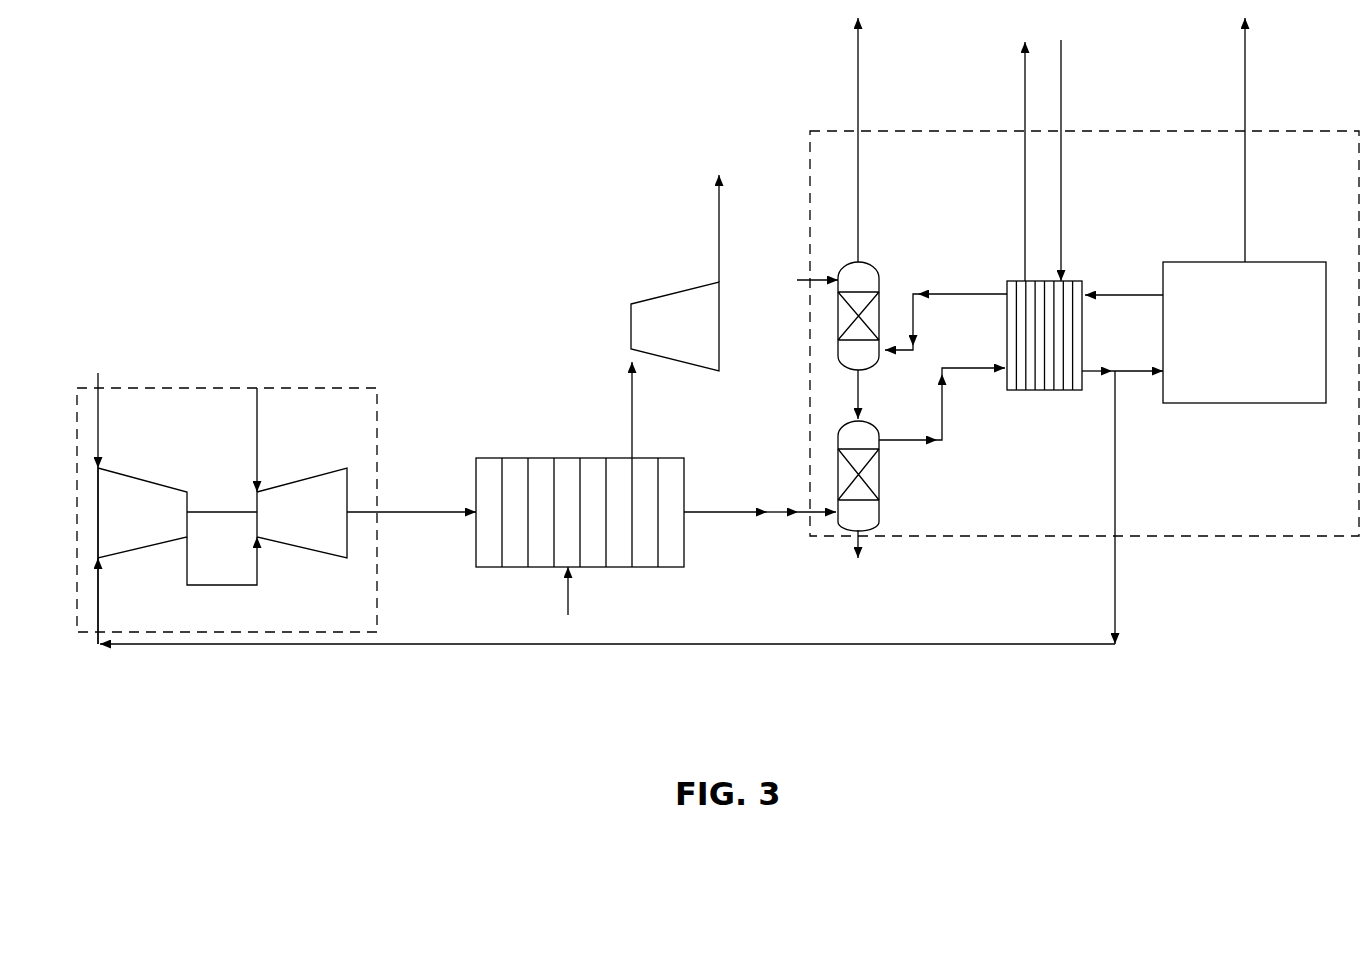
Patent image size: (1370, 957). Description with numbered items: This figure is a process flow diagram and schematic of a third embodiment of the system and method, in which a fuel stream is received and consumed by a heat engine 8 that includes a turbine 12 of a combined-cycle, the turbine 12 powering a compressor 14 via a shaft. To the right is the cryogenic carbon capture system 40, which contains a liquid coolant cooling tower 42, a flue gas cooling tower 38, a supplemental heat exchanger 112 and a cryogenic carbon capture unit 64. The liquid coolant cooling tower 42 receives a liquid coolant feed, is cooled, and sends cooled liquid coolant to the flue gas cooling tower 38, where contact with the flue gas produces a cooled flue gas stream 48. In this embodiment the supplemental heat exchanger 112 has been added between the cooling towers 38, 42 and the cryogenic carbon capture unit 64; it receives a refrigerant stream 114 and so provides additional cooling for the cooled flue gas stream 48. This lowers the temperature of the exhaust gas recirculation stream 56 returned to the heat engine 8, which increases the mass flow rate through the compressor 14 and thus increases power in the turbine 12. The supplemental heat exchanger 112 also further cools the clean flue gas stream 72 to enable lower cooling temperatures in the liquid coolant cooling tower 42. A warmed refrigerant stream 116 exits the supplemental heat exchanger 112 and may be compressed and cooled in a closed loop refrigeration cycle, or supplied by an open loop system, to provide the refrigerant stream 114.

The heat engine 8 is at (329, 387).
The turbine 12 is at (308, 477).
The compressor 14 is at (142, 548).
The flue gas cooling tower 38 is at (838, 437).
The cryogenic carbon capture system 40 is at (1296, 129).
The liquid coolant cooling tower 42 is at (862, 260).
The cooled flue gas stream 48 is at (910, 441).
The exhaust gas recirculation stream 56 is at (1117, 477).
The cryogenic carbon capture unit 64 is at (1222, 262).
The clean flue gas stream 72 is at (1103, 298).
The supplemental heat exchanger 112 is at (1065, 282).
The refrigerant stream 114 is at (1062, 145).
The warmed refrigerant stream 116 is at (1025, 145).